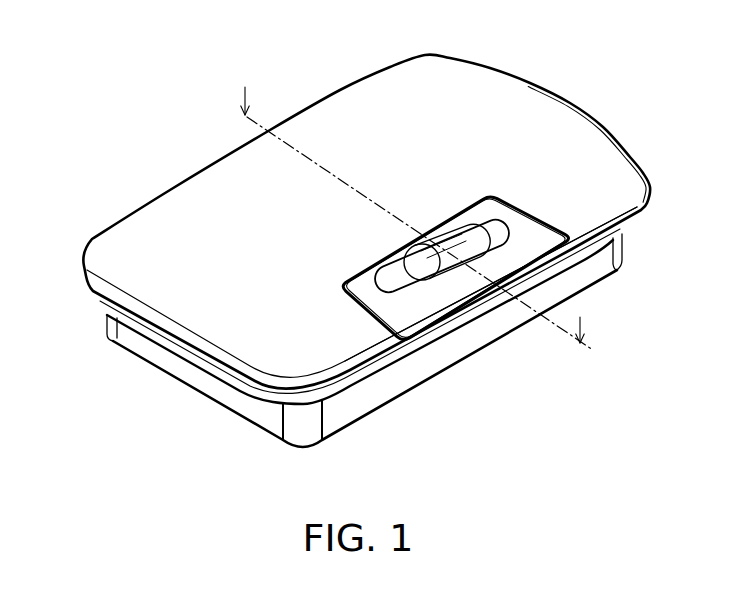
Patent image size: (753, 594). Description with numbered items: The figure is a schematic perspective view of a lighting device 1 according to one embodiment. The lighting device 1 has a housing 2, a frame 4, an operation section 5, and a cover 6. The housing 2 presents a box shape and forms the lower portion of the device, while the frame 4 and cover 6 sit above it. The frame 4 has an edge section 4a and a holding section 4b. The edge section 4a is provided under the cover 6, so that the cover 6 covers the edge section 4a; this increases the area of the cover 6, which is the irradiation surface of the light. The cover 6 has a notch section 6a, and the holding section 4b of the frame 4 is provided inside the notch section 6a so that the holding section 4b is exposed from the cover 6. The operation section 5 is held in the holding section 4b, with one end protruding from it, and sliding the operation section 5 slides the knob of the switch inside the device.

The lighting device 1 is at (359, 246).
The housing 2 is at (382, 415).
The frame 4 is at (548, 210).
The edge section 4a is at (207, 370).
The holding section 4b is at (452, 290).
The operation section 5 is at (457, 244).
The cover 6 is at (450, 115).
The notch section 6a is at (386, 320).